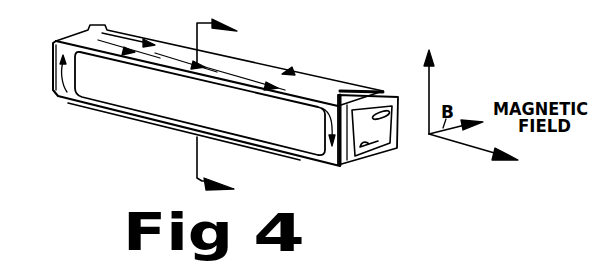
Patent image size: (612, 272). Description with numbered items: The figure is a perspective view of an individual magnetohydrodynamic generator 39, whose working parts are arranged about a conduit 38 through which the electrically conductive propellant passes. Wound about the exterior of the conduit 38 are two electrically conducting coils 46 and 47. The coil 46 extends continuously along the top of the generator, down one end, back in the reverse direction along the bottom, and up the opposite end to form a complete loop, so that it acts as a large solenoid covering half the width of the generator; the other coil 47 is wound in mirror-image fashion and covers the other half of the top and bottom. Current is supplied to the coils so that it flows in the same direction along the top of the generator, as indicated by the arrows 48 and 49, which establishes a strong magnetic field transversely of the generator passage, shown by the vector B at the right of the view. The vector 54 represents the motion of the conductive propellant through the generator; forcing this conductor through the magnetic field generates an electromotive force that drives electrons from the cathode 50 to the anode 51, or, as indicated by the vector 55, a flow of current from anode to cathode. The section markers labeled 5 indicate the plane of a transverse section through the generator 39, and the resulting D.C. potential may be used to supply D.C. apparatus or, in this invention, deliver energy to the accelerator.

The section line 5- 5 is at (229, 112).
The conduit 38 is at (388, 133).
The generator 39 is at (140, 102).
The electrically conducting coil 46 is at (60, 97).
The electrically conducting coil 47 is at (98, 25).
The arrow 48 is at (248, 78).
The arrow 49 is at (292, 70).
The cathode 50 is at (391, 108).
The anode 51 is at (363, 145).
The vector 54 is at (465, 150).
The vector 55 is at (429, 86).